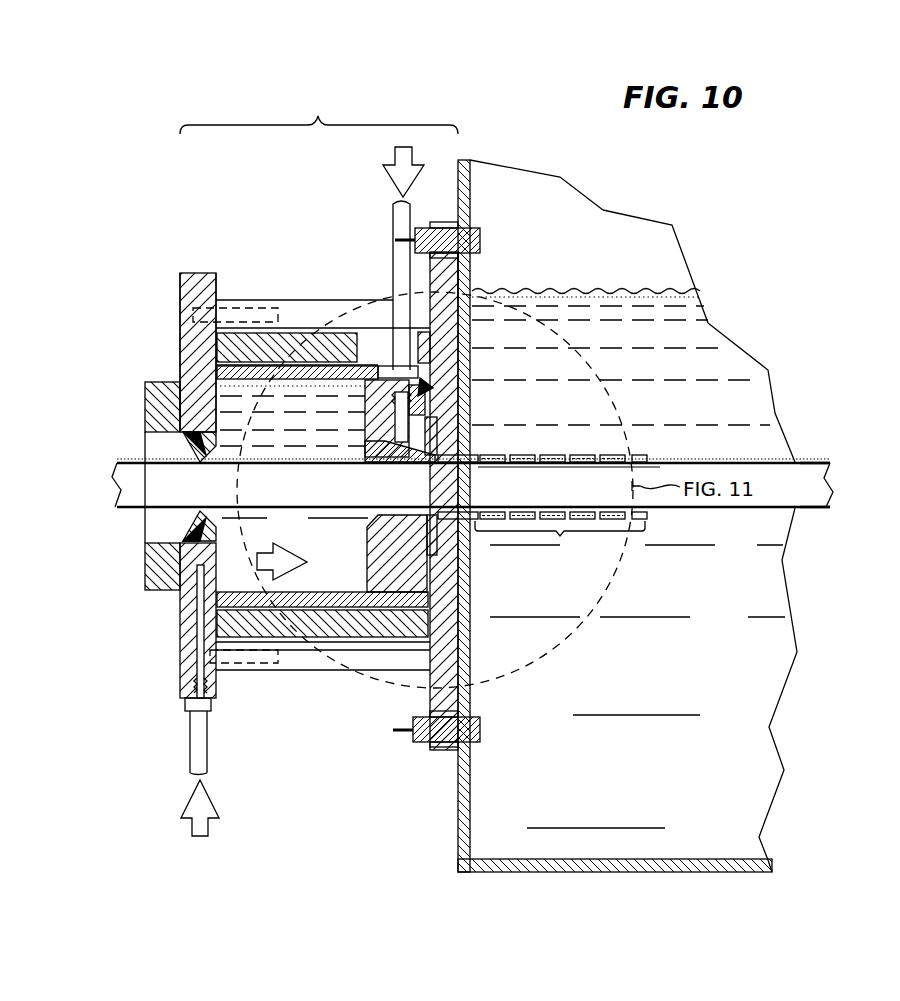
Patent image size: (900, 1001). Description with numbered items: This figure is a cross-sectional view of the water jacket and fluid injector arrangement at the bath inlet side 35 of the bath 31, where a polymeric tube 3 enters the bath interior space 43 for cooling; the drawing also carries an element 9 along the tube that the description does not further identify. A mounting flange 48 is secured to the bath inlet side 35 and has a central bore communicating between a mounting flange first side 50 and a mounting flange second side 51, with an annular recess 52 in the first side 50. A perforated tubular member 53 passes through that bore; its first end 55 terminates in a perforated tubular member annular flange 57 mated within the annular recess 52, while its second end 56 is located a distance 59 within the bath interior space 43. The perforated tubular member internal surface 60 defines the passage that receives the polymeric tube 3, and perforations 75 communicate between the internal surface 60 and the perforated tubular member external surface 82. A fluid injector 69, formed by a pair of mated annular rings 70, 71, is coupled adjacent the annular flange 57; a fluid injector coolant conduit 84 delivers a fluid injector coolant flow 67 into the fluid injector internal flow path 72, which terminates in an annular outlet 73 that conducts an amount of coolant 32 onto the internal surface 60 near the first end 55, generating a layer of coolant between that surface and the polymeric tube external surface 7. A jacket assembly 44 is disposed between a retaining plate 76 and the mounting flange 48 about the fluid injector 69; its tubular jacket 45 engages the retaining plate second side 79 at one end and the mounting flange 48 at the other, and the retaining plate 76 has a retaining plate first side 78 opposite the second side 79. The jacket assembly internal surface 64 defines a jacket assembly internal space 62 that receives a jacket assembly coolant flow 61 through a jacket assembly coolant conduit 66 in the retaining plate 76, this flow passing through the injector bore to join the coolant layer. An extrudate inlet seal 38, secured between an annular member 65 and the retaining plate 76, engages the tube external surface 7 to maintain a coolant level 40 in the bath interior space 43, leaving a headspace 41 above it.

The polymeric tube 3 is at (822, 464).
The polymeric tube external surface 7 is at (819, 508).
The shaft 9 is at (318, 498).
The bath 31 is at (500, 199).
The amount of coolant 32 is at (708, 322).
The bath inlet side 35 is at (458, 176).
The extrudate inlet seal 38 is at (195, 440).
The coolant level 40 is at (665, 290).
The headspace 41 is at (655, 250).
The bath interior space 43 is at (680, 608).
The jacket assembly 44 is at (319, 111).
The tubular jacket 45 is at (297, 378).
The mounting flange 48 is at (440, 222).
The mounting flange first side 50 is at (430, 275).
The mounting flange second side 51 is at (468, 279).
The annular recess 52 is at (438, 428).
The perforated tubular member 53 is at (552, 381).
The perforated tubular member external surface 82 is at (568, 455).
The perforated tubular member first end 55 is at (445, 517).
The perforated tubular member second end 56 is at (640, 458).
The perforated tubular member annular flange 57 is at (437, 543).
The distance 59 is at (597, 546).
The perforated tubular member internal surface 60 is at (652, 470).
The jacket assembly coolant flow 61 is at (244, 689).
The jacket assembly internal space 62 is at (336, 552).
The jacket assembly internal surface 64 is at (335, 360).
The annular member 65 is at (160, 382).
The jacket assembly coolant conduit 66 is at (197, 627).
The fluid injector coolant flow 67 is at (403, 172).
The fluid injector 69 is at (424, 385).
The annular ring 70 is at (367, 438).
The annular ring 71 is at (430, 398).
The fluid injector internal flow path 72 is at (380, 458).
The annular outlet 73 is at (458, 456).
The perforations 75 is at (540, 455).
The retaining plate 76 is at (200, 273).
The retaining plate first side 78 is at (180, 283).
The retaining plate second side 79 is at (217, 283).
The fluid injector coolant conduit 84 is at (393, 216).